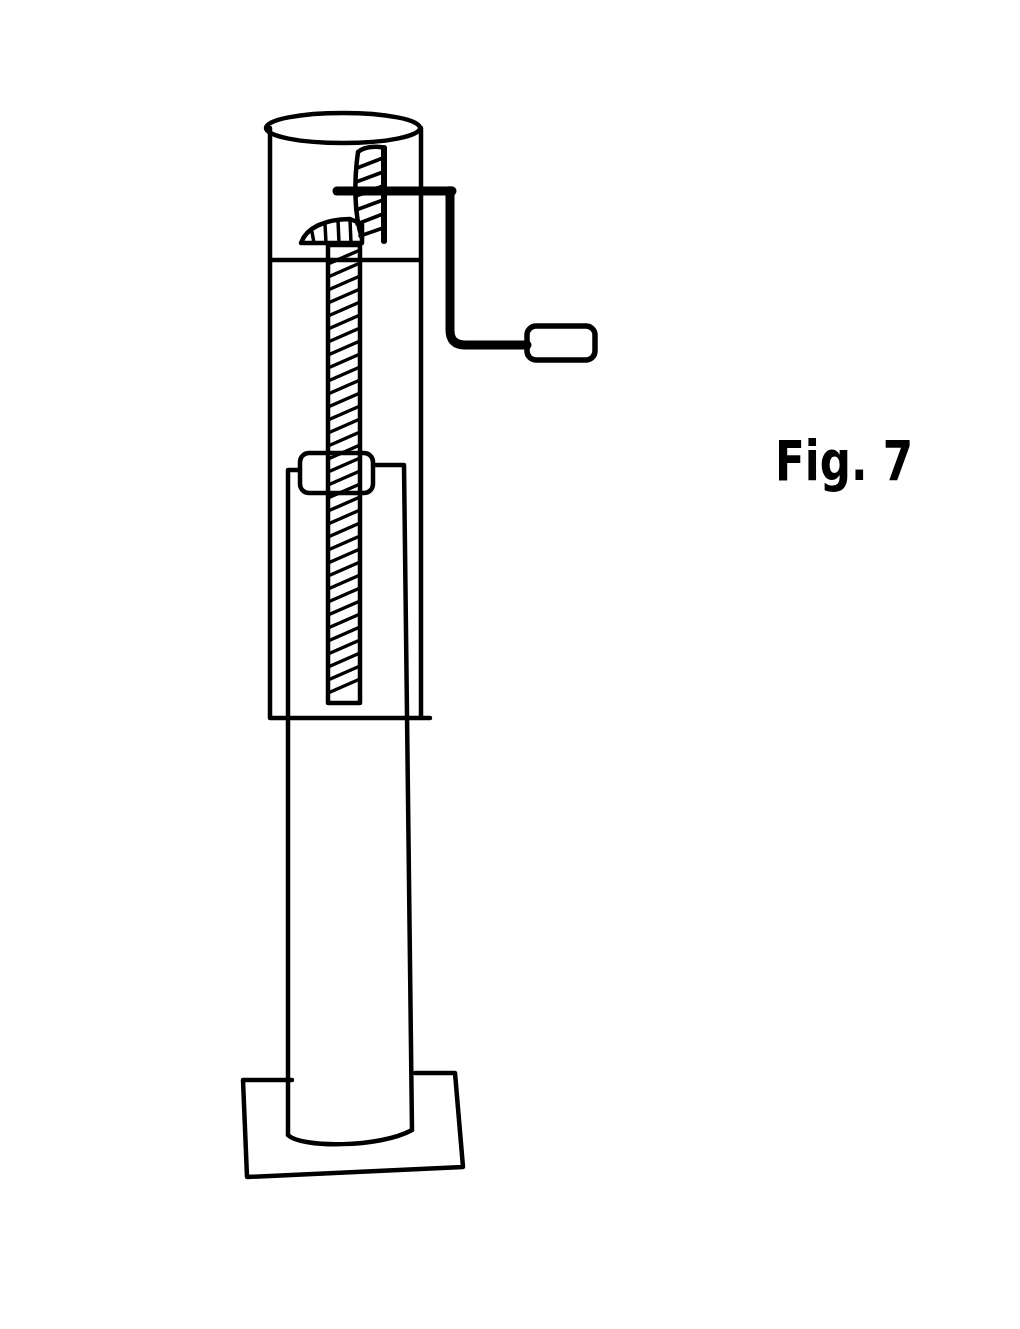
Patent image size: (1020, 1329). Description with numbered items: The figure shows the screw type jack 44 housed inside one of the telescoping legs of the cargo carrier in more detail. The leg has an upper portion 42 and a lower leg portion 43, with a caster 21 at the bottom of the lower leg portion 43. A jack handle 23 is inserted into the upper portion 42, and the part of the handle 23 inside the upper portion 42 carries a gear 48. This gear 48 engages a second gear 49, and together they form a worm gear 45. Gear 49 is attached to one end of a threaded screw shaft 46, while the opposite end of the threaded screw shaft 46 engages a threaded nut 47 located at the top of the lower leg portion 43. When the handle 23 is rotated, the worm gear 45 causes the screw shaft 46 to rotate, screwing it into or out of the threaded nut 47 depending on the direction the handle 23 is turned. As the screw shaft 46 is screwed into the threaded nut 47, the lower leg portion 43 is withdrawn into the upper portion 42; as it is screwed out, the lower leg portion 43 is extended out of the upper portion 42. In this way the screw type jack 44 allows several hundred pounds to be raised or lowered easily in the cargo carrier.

The screw type jack 44 is at (138, 430).
The upper portion of leg 42 is at (638, 512).
The lower leg portion 43 is at (410, 845).
The caster 21 is at (447, 1100).
The threaded screw shaft 46 is at (360, 383).
The threaded nut 47 is at (300, 478).
The gear 48 is at (384, 149).
The gear 49 is at (305, 229).
The jack handle 23 is at (645, 238).
The worm gear 45 is at (302, 207).